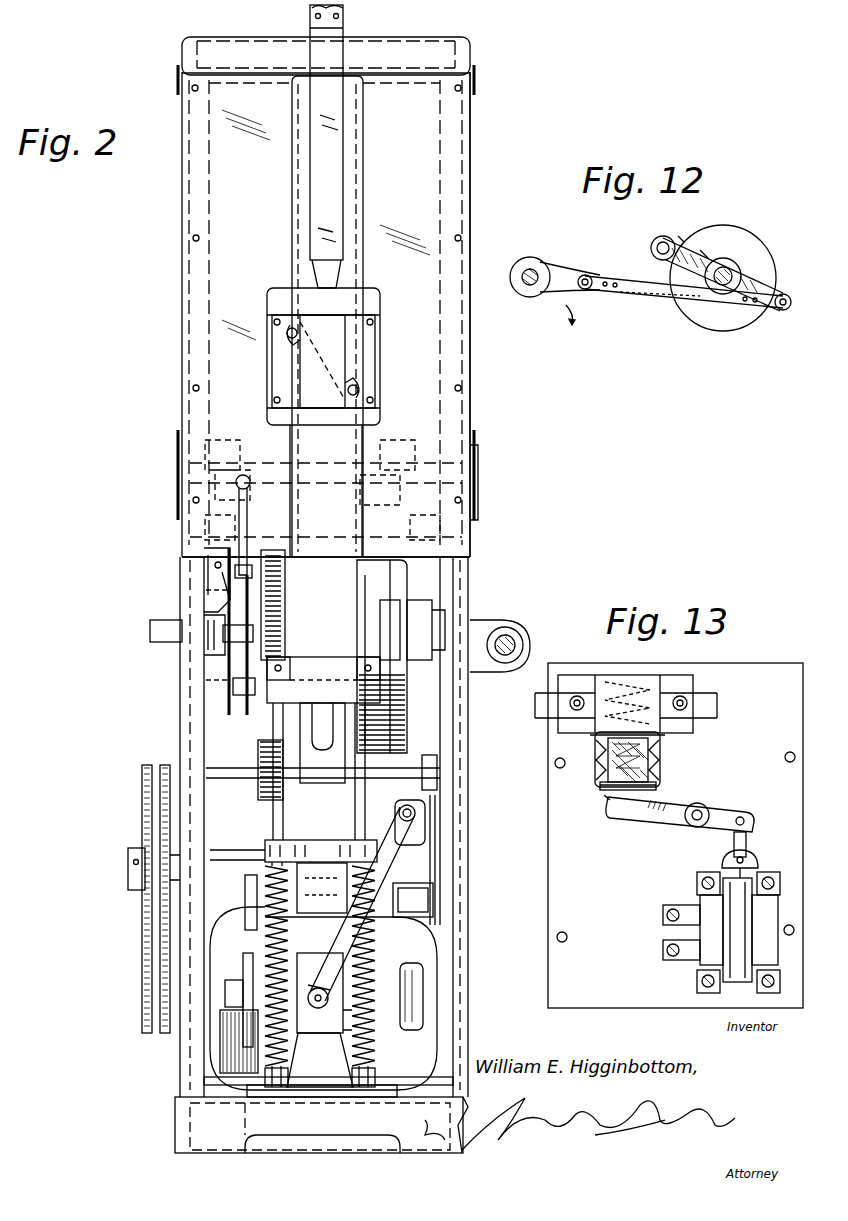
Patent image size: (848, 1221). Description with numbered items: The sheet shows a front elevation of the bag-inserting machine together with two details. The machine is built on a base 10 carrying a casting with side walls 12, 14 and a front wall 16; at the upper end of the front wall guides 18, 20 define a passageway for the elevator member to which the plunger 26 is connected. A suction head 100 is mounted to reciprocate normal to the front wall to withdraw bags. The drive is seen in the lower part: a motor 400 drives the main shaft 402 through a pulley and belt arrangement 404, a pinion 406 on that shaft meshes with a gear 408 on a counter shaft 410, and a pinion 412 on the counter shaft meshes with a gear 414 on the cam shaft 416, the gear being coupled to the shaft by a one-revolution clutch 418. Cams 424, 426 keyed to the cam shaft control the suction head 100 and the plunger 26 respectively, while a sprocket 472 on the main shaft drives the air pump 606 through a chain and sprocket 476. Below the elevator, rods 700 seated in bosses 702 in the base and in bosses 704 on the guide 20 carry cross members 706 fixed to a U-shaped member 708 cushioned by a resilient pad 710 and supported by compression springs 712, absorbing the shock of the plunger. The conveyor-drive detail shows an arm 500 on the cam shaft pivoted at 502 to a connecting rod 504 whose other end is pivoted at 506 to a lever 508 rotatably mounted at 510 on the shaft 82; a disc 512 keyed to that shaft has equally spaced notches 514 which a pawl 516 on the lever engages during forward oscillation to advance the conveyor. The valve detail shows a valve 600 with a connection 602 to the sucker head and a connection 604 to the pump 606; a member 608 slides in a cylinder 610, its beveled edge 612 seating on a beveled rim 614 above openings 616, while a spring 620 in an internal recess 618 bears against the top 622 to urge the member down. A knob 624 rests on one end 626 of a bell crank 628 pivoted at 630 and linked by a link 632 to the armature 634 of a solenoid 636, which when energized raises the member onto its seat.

In FIG. 2, the base 10 is at (180, 1120).
In FIG. 2, the side wall 12 is at (182, 212).
In FIG. 2, the side wall 14 is at (470, 222).
In FIG. 2, the front wall 16 is at (418, 186).
In FIG. 2, the guide 18 is at (292, 138).
In FIG. 2, the guide 20 is at (355, 142).
In FIG. 2, the plunger 26 is at (330, 223).
In FIG. 2, the suction head 100 is at (368, 357).
In FIG. 2, the motor 400 is at (395, 963).
In FIG. 2, the main shaft 402 is at (232, 846).
In FIG. 2, the pulley and belt arrangement 404 is at (143, 970).
In FIG. 2, the pinion 406 is at (322, 913).
In FIG. 2, the gear 408 is at (345, 820).
In FIG. 2, the counter shaft 410 is at (240, 768).
In FIG. 2, the pinion 412 is at (260, 790).
In FIG. 2, the gear 414 is at (204, 606).
In FIG. 12, the cam shaft 416 is at (530, 252).
In FIG. 2, the one-revolution clutch 418 is at (230, 631).
In FIG. 2, the cam 424 is at (385, 590).
In FIG. 2, the cam 426 is at (398, 600).
In FIG. 2, the sprocket 472 is at (250, 893).
In FIG. 2, the sprocket 476 is at (255, 1035).
In FIG. 12, the shaft 82 is at (730, 300).
In FIG. 12, the arm 500 is at (552, 298).
In FIG. 12, the pivot 502 is at (588, 274).
In FIG. 12, the connecting rod 504 is at (660, 296).
In FIG. 12, the pivot 506 is at (784, 311).
In FIG. 12, the lever 508 is at (742, 262).
In FIG. 12, the rotatable mounting 510 is at (672, 285).
In FIG. 12, the disc 512 is at (750, 238).
In FIG. 12, the notch 514 is at (700, 232).
In FIG. 12, the pawl 516 is at (660, 226).
In FIG. 13, the valve 600 is at (665, 680).
In FIG. 13, the connection 602 is at (535, 690).
In FIG. 13, the connection 604 is at (713, 690).
In FIG. 2, the air pump 606 is at (370, 1030).
In FIG. 13, the member 608 is at (660, 773).
In FIG. 13, the cylinder 610 is at (608, 750).
In FIG. 13, the beveled edge 612 is at (595, 740).
In FIG. 13, the beveled rim 614 is at (660, 740).
In FIG. 13, the openings 616 is at (660, 757).
In FIG. 13, the internal recess 618 is at (656, 787).
In FIG. 13, the spring 620 is at (600, 788).
In FIG. 13, the top 622 is at (626, 678).
In FIG. 13, the knob 624 is at (606, 804).
In FIG. 13, the end 626 is at (612, 820).
In FIG. 13, the bell crank 628 is at (663, 825).
In FIG. 13, the pivot 630 is at (697, 827).
In FIG. 13, the link 632 is at (746, 845).
In FIG. 13, the armature 634 is at (760, 858).
In FIG. 13, the solenoid 636 is at (728, 950).
In FIG. 2, the rods 700 is at (280, 1025).
In FIG. 2, the bosses 702 is at (290, 1090).
In FIG. 2, the bosses 704 is at (272, 667).
In FIG. 2, the cross members 706 is at (372, 690).
In FIG. 2, the U-shaped member 708 is at (415, 815).
In FIG. 2, the resilient pad 710 is at (433, 900).
In FIG. 2, the compression springs 712 is at (380, 950).